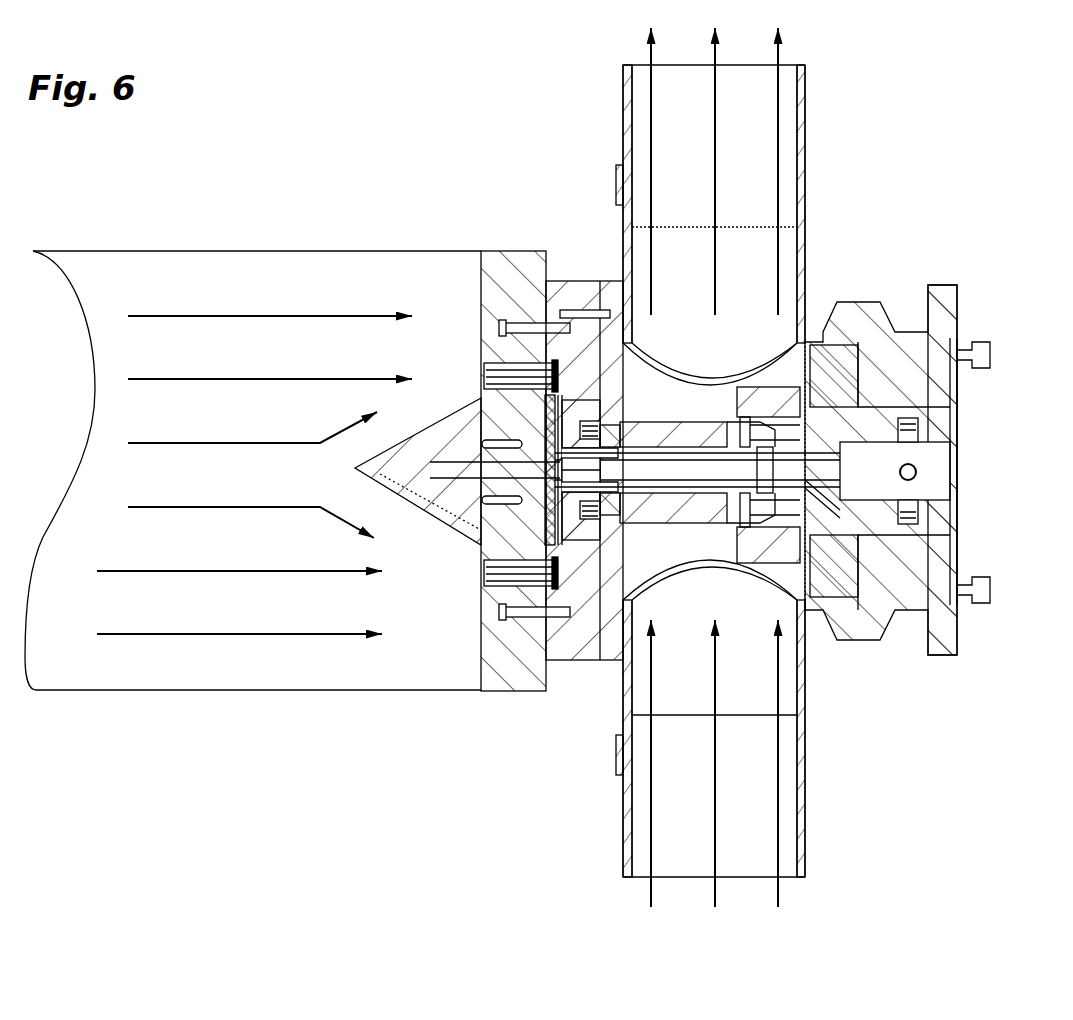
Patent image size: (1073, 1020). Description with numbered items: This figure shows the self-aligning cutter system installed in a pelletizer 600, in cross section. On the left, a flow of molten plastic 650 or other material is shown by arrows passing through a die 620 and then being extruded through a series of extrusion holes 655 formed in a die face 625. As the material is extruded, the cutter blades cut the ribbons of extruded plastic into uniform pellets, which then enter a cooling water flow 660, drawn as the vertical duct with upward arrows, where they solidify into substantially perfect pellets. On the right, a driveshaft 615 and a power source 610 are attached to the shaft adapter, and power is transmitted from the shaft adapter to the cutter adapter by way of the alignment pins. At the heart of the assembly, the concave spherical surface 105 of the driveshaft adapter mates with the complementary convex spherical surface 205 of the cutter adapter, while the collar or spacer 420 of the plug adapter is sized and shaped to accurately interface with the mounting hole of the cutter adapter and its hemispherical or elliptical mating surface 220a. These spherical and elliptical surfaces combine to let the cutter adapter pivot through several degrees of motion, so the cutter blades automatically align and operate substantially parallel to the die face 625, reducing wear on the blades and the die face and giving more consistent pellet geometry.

The pelletizer 600 is at (510, 90).
The die face 625 is at (552, 365).
The extrusion holes 655 is at (500, 582).
The die 620 is at (517, 678).
The flow of molten plastic 650 is at (212, 425).
The cooling water flow 660 is at (757, 760).
The collar or spacer 420 is at (588, 445).
The convex spherical surface 205 is at (618, 457).
The concave spherical surface 105 is at (598, 492).
The hemispherical or elliptical mating surface 220a is at (578, 500).
The power source 610 is at (932, 440).
The driveshaft 615 is at (812, 490).